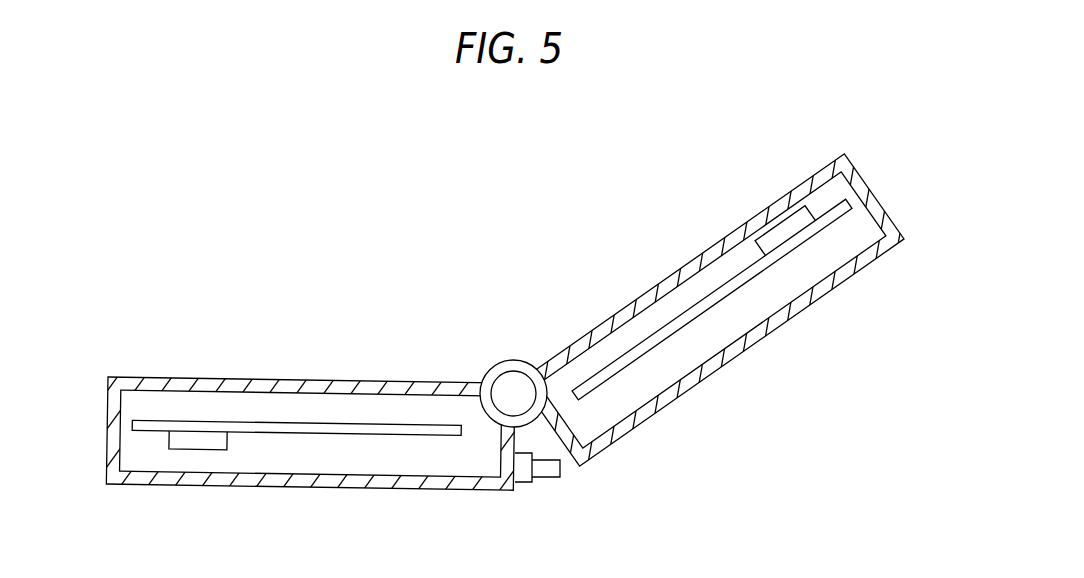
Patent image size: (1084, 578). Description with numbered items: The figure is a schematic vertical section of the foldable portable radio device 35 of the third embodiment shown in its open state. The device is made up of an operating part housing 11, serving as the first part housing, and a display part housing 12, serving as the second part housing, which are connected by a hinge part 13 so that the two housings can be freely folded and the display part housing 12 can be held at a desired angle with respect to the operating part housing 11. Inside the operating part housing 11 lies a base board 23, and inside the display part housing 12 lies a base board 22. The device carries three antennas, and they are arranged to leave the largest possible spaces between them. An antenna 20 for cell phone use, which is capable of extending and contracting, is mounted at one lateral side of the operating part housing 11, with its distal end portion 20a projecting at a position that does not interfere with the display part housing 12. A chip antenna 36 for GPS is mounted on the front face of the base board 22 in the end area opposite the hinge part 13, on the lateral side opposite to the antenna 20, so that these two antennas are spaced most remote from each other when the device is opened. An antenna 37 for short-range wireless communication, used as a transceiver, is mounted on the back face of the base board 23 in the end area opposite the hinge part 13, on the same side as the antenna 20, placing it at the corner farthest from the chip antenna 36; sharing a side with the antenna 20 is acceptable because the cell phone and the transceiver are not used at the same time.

The operating part housing 11 is at (401, 385).
The display part housing 12 is at (705, 247).
The hinge part 13 is at (507, 360).
The antenna 20 is at (519, 475).
The distal end portion 20a is at (553, 470).
The base board 22 is at (733, 287).
The base board 23 is at (361, 430).
The portable radio device 35 is at (703, 308).
The chip antenna 36 is at (790, 225).
The antenna 37 is at (200, 443).